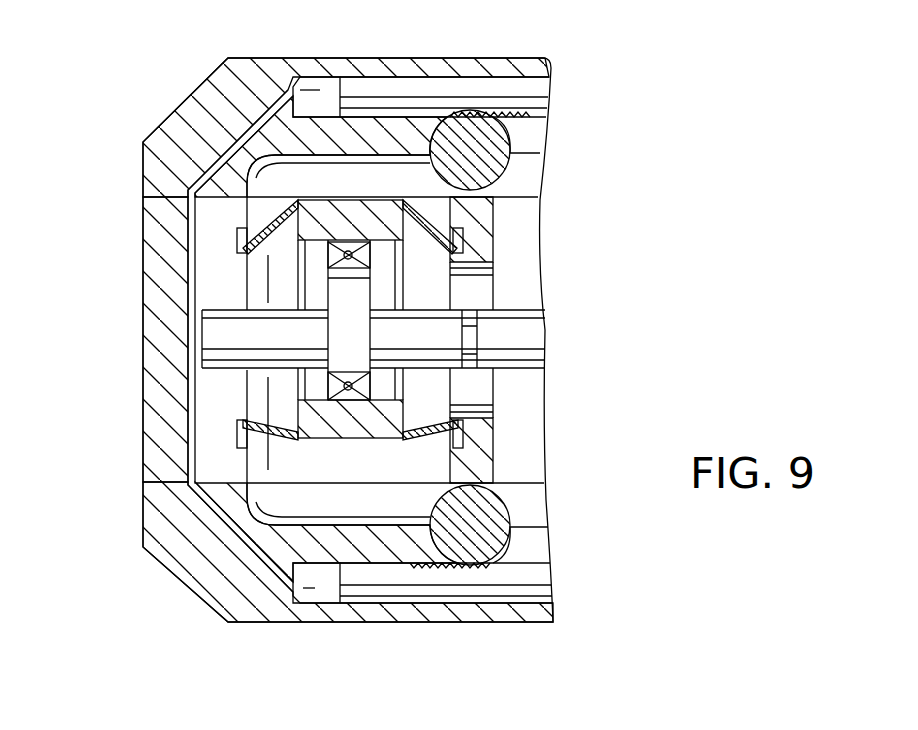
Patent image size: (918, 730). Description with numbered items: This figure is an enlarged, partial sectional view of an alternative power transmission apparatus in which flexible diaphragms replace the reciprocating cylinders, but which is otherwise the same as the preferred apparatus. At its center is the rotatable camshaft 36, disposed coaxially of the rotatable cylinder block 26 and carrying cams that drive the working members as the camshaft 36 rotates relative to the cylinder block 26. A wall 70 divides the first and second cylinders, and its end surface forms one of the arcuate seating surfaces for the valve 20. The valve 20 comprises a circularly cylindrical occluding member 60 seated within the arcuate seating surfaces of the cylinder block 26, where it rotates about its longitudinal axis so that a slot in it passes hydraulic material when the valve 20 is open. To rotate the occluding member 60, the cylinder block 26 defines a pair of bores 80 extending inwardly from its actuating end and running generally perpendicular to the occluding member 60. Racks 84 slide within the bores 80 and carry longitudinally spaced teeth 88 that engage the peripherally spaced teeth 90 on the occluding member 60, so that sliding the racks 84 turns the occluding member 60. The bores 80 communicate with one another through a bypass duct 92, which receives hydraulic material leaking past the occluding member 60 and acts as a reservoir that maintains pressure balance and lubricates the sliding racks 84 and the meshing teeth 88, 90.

The valve 20 is at (575, 101).
The rotatable cylinder block 26 is at (230, 603).
The rotatable camshaft 36 is at (520, 337).
The occluding member 60 is at (487, 165).
The wall 70 is at (482, 232).
The bores 80 is at (312, 83).
The racks 84 is at (413, 83).
The teeth 88 is at (512, 112).
The teeth 90 is at (500, 131).
The bypass duct 92 is at (185, 243).